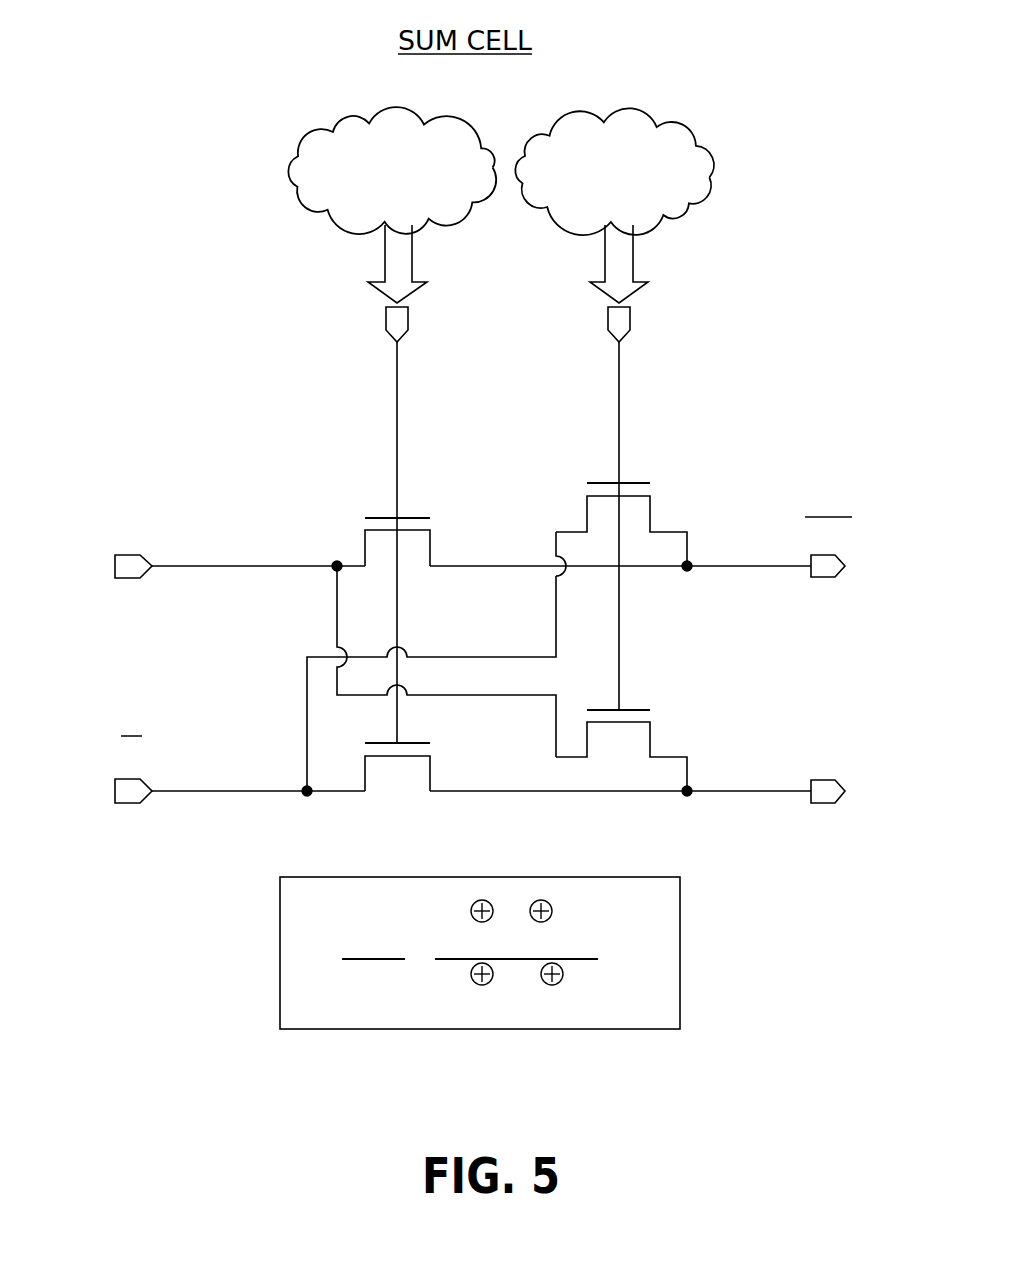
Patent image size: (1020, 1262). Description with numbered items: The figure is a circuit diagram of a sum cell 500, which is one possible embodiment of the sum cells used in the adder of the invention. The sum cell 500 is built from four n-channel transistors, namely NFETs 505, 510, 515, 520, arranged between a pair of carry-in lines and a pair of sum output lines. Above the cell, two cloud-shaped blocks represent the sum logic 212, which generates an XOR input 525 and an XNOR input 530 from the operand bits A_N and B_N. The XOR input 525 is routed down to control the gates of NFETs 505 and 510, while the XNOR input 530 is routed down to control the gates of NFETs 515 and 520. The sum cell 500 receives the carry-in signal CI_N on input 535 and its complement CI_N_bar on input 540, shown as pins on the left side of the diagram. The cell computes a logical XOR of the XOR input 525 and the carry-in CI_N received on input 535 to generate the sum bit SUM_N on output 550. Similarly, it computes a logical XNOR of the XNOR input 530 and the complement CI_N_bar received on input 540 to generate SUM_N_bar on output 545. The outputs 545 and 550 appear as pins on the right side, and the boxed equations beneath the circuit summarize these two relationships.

The sum cell 500 is at (102, 212).
The sum logic 212 is at (293, 164).
The XOR input 525 is at (380, 276).
The XNOR input 530 is at (642, 276).
The NFET 505 is at (376, 512).
The NFET 510 is at (398, 787).
The NFET 515 is at (640, 477).
The NFET 520 is at (640, 697).
The input 535 is at (131, 573).
The input 540 is at (131, 798).
The output 545 is at (822, 573).
The output 550 is at (822, 798).